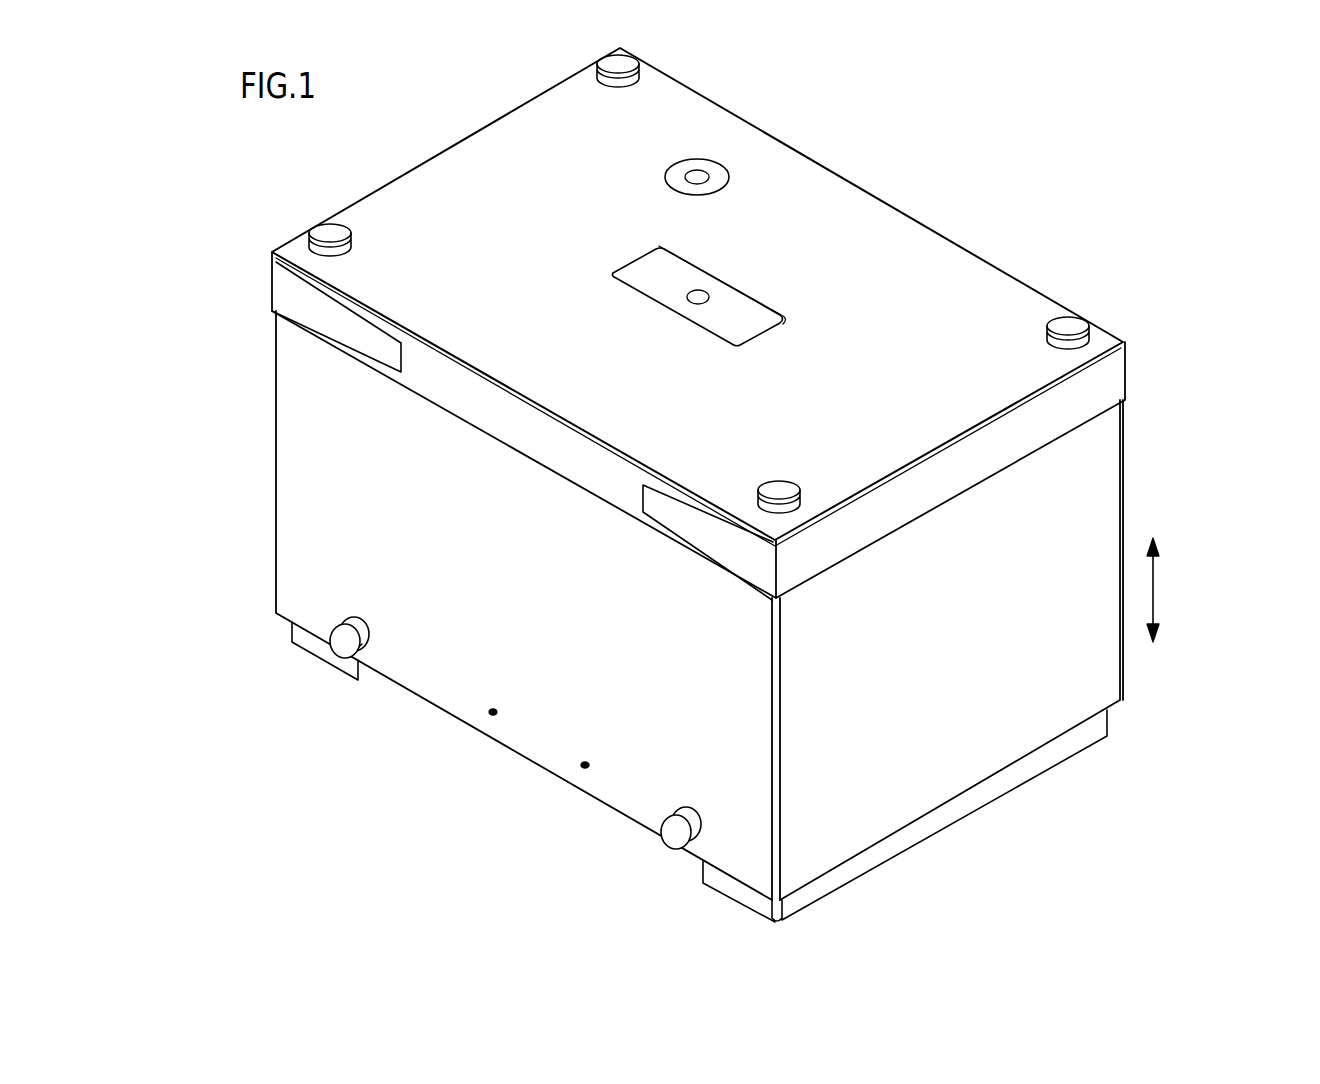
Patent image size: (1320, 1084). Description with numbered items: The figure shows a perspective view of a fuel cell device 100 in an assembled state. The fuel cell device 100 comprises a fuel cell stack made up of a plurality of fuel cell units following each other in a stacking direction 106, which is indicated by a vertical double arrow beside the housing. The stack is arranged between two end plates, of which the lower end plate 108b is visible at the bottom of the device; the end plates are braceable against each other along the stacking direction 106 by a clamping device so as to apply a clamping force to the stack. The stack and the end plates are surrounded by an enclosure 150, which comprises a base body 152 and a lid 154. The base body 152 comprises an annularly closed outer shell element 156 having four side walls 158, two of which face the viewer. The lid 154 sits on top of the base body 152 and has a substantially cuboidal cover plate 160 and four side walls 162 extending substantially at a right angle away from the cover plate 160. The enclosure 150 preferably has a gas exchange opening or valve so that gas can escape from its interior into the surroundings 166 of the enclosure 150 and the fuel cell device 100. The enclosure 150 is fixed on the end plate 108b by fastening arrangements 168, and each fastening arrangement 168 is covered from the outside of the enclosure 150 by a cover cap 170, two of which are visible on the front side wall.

The fuel cell device 100 is at (1018, 260).
The stacking direction 106 is at (1153, 590).
The end plate 108b is at (1063, 750).
The enclosure 150 is at (260, 436).
The base body 152 is at (305, 503).
The lid 154 is at (830, 210).
The outer shell element 156 is at (305, 563).
The side walls 158 is at (305, 367).
The cover plate 160 is at (907, 252).
The side walls 162 is at (505, 418).
The surroundings 166 is at (818, 77).
The fastening arrangement 168 is at (318, 661).
The cover cap 170 is at (350, 653).